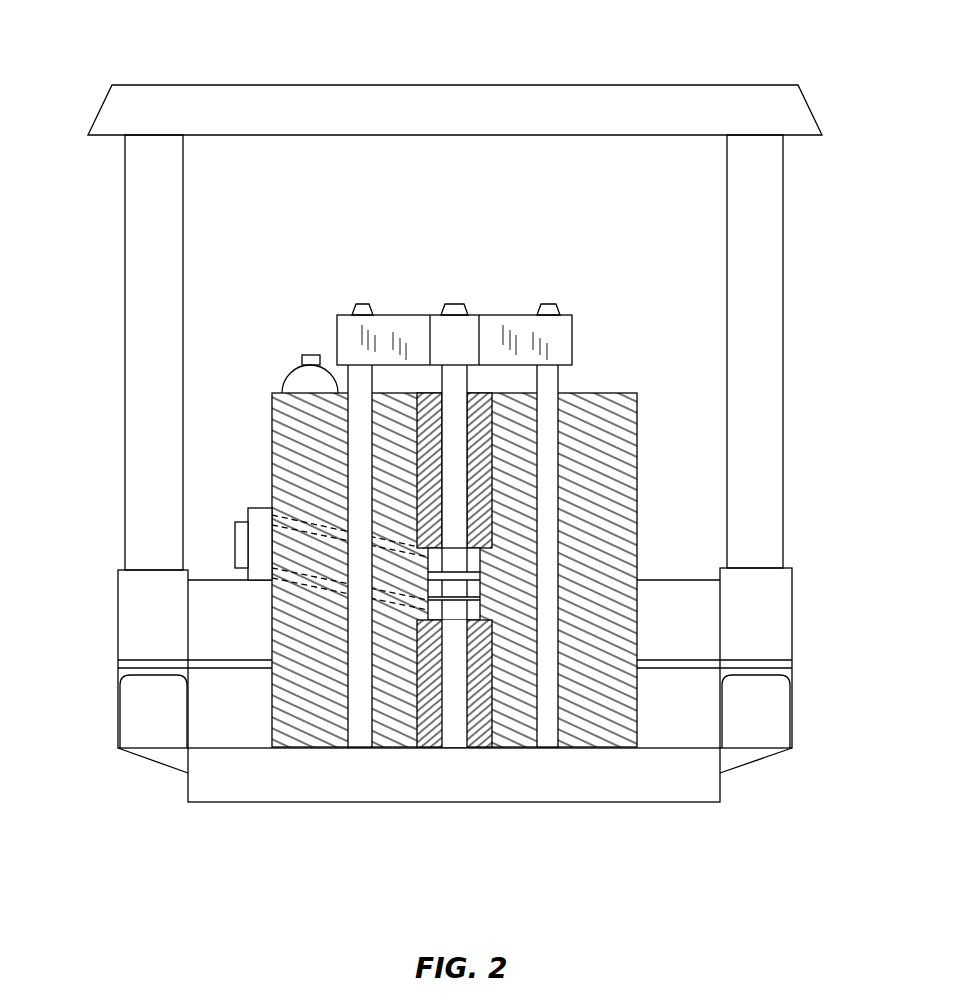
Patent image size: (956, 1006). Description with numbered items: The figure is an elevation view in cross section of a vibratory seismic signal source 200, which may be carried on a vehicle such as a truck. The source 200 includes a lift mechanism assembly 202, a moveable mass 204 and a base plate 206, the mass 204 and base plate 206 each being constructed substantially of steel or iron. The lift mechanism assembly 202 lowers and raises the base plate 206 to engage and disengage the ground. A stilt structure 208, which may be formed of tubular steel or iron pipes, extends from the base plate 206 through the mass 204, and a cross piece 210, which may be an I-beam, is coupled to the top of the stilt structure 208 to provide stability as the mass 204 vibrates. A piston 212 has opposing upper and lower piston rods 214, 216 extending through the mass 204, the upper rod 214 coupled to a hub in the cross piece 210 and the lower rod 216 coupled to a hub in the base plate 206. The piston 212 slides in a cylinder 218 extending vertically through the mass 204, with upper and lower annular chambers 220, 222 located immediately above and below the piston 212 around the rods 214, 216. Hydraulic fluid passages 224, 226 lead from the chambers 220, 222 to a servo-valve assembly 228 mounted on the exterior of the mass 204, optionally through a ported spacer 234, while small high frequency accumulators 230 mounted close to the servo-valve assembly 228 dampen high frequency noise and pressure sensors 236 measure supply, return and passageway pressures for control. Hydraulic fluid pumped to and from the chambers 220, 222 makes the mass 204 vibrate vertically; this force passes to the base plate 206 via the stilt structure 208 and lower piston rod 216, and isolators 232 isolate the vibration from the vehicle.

The vibratory seismic signal source 200 is at (112, 85).
The lift mechanism assembly 202 is at (140, 207).
The moveable mass 204 is at (602, 446).
The base plate 206 is at (720, 802).
The stilt structure 208 is at (362, 735).
The cross piece 210 is at (560, 316).
The piston 212 is at (482, 582).
The upper piston rod 214 is at (455, 423).
The lower piston rod 216 is at (455, 735).
The cylinder 218 is at (427, 417).
The upper annular chamber 220 is at (482, 566).
The lower annular chamber 222 is at (482, 607).
The hydraulic fluid passage 224 is at (320, 585).
The hydraulic fluid passage 226 is at (300, 530).
The servo-valve assembly 228 is at (247, 530).
The high frequency accumulator 230 is at (302, 360).
The isolator 232 is at (125, 720).
The ported spacer 234 is at (262, 553).
The pressure sensor 236 is at (278, 513).